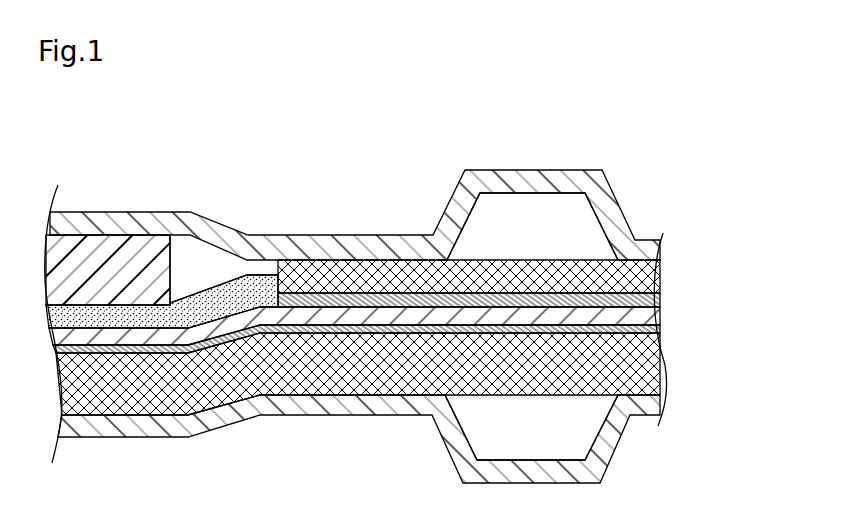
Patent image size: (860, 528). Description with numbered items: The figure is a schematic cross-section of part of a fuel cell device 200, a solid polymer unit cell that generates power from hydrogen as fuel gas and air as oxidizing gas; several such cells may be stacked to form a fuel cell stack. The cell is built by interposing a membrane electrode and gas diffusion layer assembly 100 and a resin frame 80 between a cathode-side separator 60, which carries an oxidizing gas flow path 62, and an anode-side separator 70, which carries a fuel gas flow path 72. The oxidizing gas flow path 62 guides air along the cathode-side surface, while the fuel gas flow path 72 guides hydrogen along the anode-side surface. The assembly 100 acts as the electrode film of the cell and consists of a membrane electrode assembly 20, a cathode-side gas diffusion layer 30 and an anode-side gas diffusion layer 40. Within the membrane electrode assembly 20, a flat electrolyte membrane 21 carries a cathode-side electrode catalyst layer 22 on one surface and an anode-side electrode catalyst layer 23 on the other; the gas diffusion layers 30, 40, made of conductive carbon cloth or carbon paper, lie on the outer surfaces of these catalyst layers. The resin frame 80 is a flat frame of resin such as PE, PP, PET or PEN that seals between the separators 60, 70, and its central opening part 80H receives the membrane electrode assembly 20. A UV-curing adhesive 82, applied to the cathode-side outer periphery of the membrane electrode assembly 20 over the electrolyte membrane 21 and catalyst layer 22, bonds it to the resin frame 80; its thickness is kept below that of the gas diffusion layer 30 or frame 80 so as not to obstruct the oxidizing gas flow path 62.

The fuel cell device 200 is at (617, 126).
The membrane electrode and gas diffusion layer assembly 100 is at (440, 325).
The membrane electrode assembly 20 is at (413, 315).
The electrolyte membrane 21 is at (657, 317).
The cathode-side electrode catalyst layer 22 is at (656, 301).
The anode-side electrode catalyst layer 23 is at (395, 342).
The cathode-side gas diffusion layer 30 is at (656, 272).
The anode-side gas diffusion layer 40 is at (397, 374).
The cathode-side separator 60 is at (620, 207).
The oxidizing gas flow path 62 is at (528, 203).
The anode-side separator 70 is at (617, 450).
The fuel gas flow path 72 is at (506, 458).
The resin frame 80 is at (129, 253).
The opening part 80H is at (173, 262).
The adhesive 82 is at (240, 288).